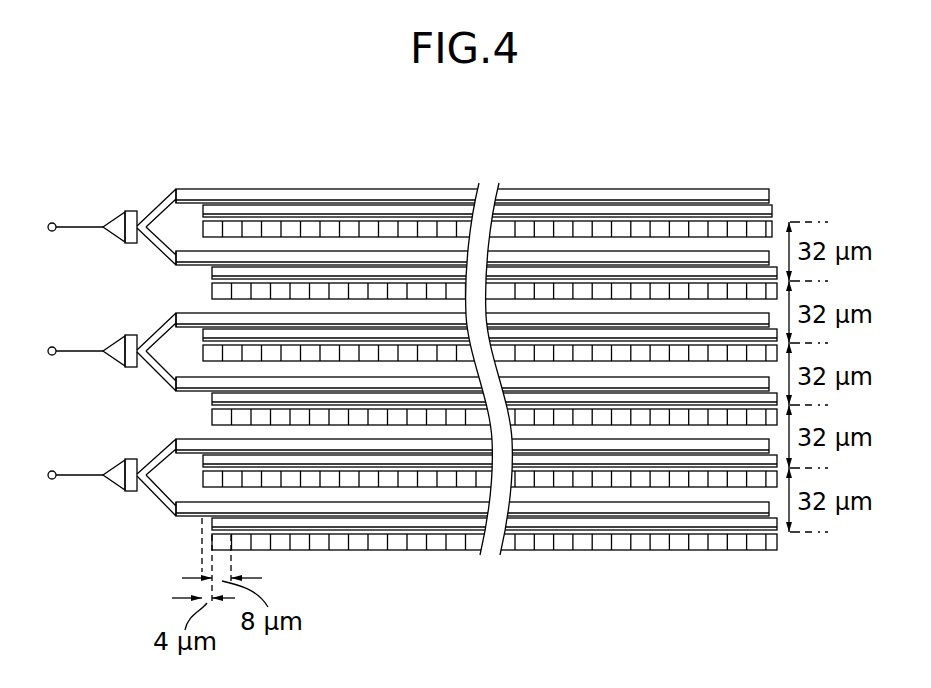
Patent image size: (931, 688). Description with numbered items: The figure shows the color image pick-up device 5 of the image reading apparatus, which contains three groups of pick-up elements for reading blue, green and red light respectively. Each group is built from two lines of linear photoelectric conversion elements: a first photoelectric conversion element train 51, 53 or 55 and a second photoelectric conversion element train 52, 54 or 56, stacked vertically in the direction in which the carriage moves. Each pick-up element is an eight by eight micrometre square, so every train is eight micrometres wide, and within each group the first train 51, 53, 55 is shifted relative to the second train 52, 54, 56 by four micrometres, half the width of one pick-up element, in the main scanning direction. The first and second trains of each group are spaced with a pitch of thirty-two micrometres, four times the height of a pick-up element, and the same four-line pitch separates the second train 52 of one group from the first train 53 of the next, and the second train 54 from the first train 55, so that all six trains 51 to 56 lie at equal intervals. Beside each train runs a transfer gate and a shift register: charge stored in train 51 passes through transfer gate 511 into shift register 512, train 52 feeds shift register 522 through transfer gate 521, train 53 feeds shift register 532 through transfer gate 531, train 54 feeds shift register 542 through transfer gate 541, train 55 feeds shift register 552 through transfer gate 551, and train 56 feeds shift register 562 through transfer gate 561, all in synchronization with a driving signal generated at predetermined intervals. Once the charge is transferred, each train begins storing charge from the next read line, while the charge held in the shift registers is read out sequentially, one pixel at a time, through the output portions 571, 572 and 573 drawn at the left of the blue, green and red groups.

The color image pick-up device 5 is at (158, 153).
The first photoelectric conversion element train 51 is at (436, 186).
The second photoelectric conversion element train 52 is at (438, 216).
The first photoelectric conversion element train 53 is at (438, 248).
The second photoelectric conversion element train 54 is at (438, 469).
The first photoelectric conversion element train 55 is at (438, 505).
The second photoelectric conversion element train 56 is at (438, 531).
The transfer gate 511 is at (226, 208).
The shift register 512 is at (293, 192).
The transfer gate 521 is at (584, 272).
The shift register 522 is at (668, 255).
The transfer gate 531 is at (367, 337).
The shift register 532 is at (437, 318).
The transfer gate 541 is at (537, 398).
The shift register 542 is at (602, 380).
The transfer gate 551 is at (304, 458).
The shift register 552 is at (390, 443).
The transfer gate 561 is at (678, 522).
The shift register 562 is at (745, 507).
The output portion 571 is at (114, 221).
The output portion 572 is at (114, 345).
The output portion 573 is at (114, 470).